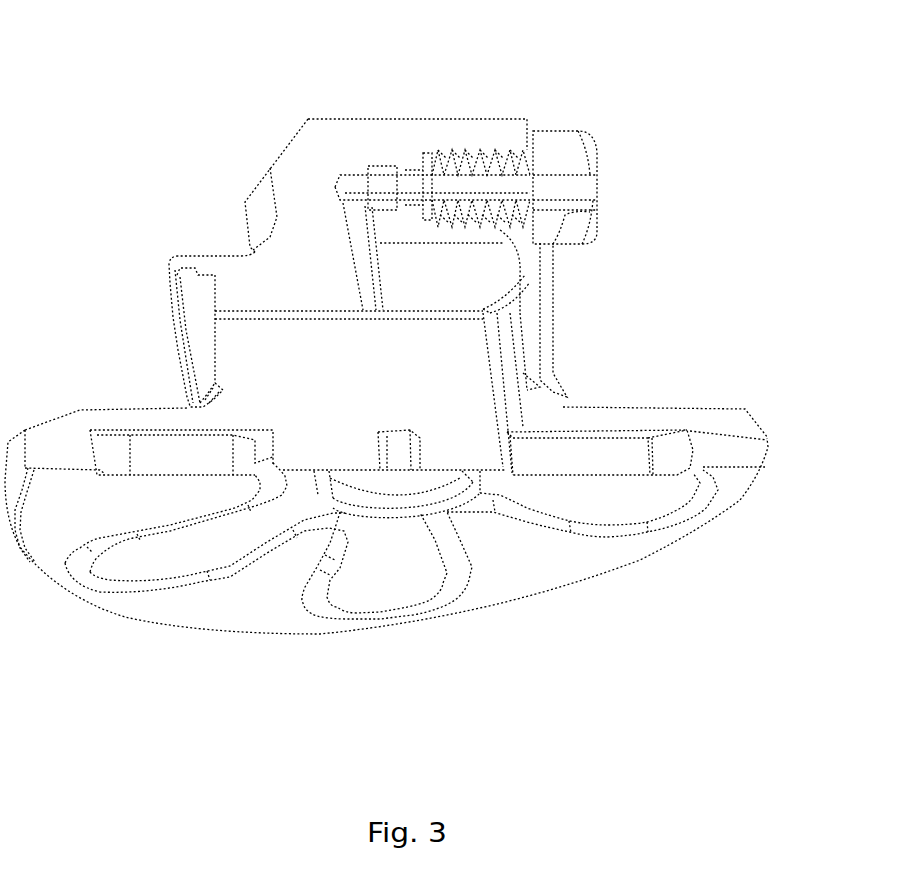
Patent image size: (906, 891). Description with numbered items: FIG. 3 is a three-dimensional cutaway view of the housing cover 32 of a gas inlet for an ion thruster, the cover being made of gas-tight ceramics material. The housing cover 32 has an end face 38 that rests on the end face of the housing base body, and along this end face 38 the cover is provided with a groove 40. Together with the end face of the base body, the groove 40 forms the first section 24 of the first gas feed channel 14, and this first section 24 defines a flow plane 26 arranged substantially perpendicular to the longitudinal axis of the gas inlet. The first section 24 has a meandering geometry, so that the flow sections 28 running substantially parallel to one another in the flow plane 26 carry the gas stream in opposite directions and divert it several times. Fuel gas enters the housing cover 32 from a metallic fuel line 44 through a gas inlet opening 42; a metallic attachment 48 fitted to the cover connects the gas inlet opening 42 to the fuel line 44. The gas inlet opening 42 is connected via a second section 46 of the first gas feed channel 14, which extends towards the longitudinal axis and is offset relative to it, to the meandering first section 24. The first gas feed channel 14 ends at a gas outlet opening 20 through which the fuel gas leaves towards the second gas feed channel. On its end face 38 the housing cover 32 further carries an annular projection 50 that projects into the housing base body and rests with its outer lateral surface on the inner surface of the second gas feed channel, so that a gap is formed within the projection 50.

The first gas feed channel 14 is at (527, 432).
The gas outlet opening 20 is at (408, 450).
The first section 24 is at (640, 452).
The flow plane 26 is at (703, 463).
The flow sections 28 is at (230, 565).
The housing cover 32 is at (78, 432).
The end face 38 is at (193, 610).
The groove 40 is at (528, 513).
The gas inlet opening 42 is at (497, 320).
The fuel line 44 is at (557, 143).
The second section 46 is at (500, 378).
The metallic attachment 48 is at (215, 254).
The annular projection 50 is at (438, 490).